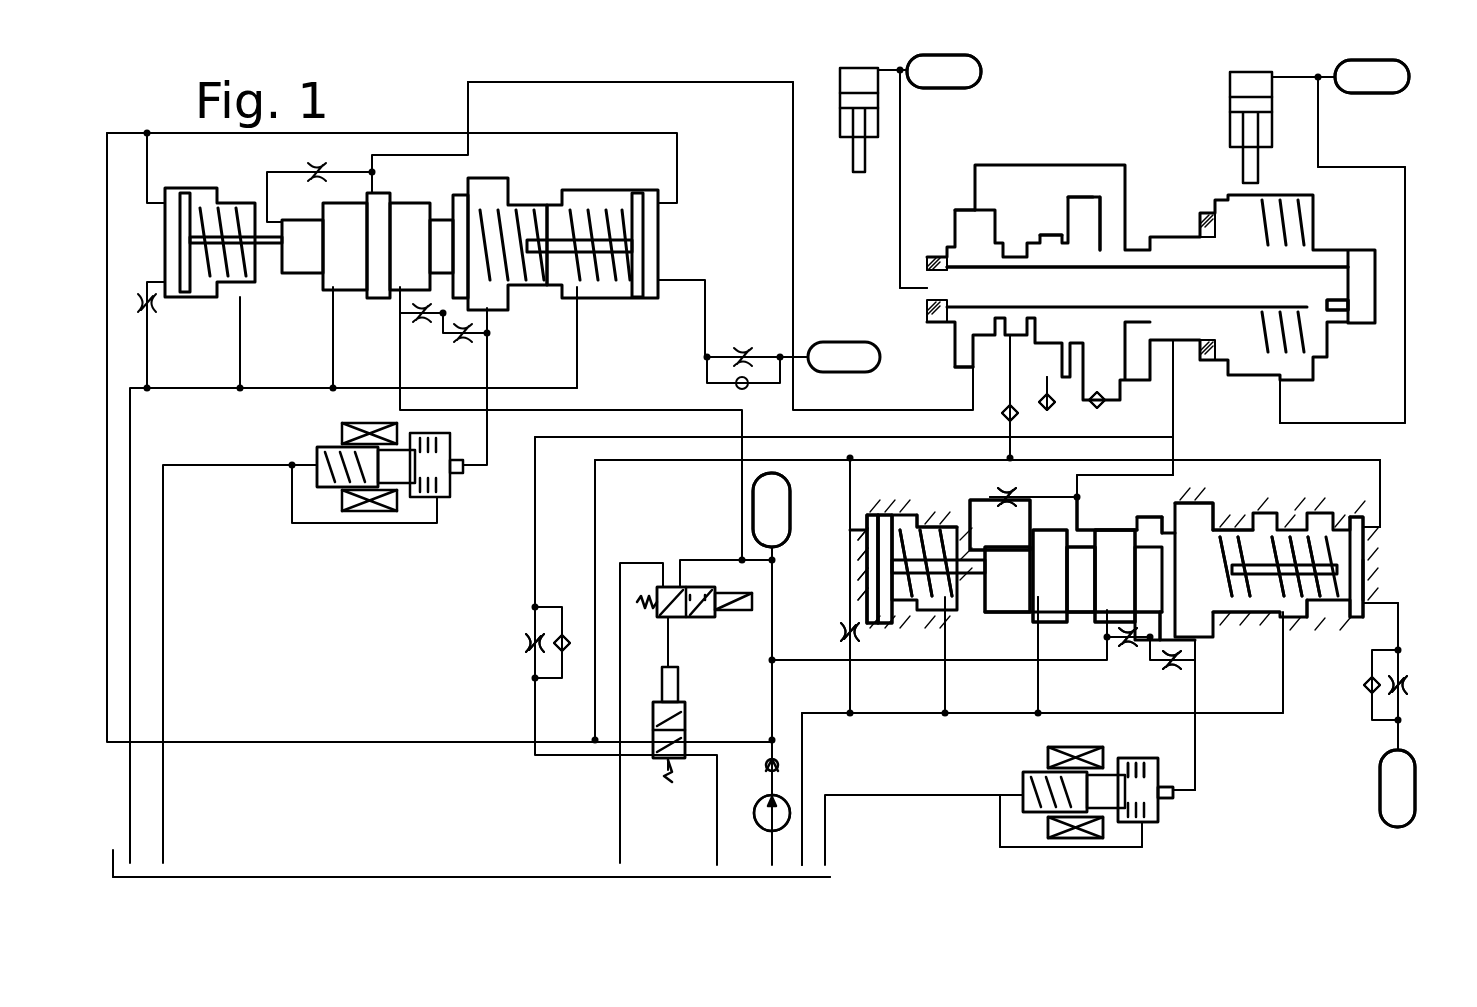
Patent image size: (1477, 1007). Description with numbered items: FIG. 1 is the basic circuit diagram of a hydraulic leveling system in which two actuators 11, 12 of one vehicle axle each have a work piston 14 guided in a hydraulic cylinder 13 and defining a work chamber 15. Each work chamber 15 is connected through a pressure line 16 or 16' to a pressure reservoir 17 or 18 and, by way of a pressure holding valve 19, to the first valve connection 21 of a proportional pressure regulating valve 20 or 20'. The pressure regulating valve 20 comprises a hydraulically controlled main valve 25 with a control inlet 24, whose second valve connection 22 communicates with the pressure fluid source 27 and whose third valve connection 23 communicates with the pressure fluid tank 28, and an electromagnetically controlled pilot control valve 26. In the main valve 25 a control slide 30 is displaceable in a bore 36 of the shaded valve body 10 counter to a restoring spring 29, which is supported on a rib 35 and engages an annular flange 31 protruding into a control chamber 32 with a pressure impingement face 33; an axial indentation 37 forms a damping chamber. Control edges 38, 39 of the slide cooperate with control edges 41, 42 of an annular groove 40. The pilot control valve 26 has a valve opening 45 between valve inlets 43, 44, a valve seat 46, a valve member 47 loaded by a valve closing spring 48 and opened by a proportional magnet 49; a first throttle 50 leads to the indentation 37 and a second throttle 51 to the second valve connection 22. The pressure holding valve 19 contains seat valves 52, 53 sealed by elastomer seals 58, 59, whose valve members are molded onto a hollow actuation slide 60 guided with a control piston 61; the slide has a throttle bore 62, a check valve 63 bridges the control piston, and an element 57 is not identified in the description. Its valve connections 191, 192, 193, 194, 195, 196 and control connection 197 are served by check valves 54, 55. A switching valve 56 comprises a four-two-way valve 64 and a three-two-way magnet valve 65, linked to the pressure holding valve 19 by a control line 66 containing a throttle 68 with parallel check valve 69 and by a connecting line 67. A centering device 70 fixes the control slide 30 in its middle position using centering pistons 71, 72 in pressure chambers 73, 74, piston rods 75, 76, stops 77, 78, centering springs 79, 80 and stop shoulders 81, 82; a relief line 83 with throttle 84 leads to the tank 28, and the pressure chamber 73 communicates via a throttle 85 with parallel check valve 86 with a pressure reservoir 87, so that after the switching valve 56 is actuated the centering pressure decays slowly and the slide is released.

The valve body 10 is at (990, 623).
The actuator 11 is at (1255, 72).
The actuator 12 is at (858, 68).
The hydraulic cylinder 13 is at (845, 118).
The work piston 14 is at (880, 93).
The work chamber 15 is at (842, 75).
The pressure line 16 is at (1302, 250).
The pressure line 16' is at (723, 94).
The pressure reservoir 17 is at (1395, 75).
The pressure reservoir 18 is at (960, 62).
The pressure holding valve 19 is at (1345, 248).
The proportional pressure regulating valve 20 is at (978, 834).
The proportional pressure regulating valve 20' is at (292, 510).
The first valve connection 21 is at (1080, 480).
The second valve connection 22 is at (1103, 622).
The third valve connection 23 is at (1035, 605).
The control inlet 24 is at (1175, 625).
The main valve 25 is at (1188, 500).
The pilot control valve 26 is at (1035, 847).
The pressure fluid source 27 is at (770, 820).
The pressure fluid tank 28 is at (495, 870).
The restoring spring 29 is at (1258, 540).
The control slide 30 is at (1055, 530).
The annular flange 31 is at (1205, 525).
The control chamber 32 is at (1215, 612).
The pressure impingement face 33 is at (1160, 525).
The rib 35 is at (1292, 535).
The bore 36 is at (990, 510).
The axial indentation 37 is at (1198, 650).
The control edge 38 is at (1090, 520).
The control edge 39 is at (1007, 495).
The annular groove 40 is at (1048, 622).
The control edge 41 is at (1072, 615).
The control edge 42 is at (1038, 648).
The valve inlet 43 is at (1178, 798).
The valve inlet 44 is at (1150, 822).
The valve opening 45 is at (1175, 790).
The valve seat 46 is at (1165, 785).
The valve member 47 is at (1152, 760).
The valve closing spring 48 is at (1045, 775).
The proportional magnet 49 is at (1075, 840).
The first throttle 50 is at (1172, 668).
The second throttle 51 is at (1128, 645).
The seat valve 52 is at (1207, 210).
The seat valve 53 is at (945, 245).
The check valve 54 is at (1052, 404).
The check valve 55 is at (1002, 413).
The switching valve 56 is at (685, 640).
The land 57 is at (1080, 203).
The elastomer seal 58 is at (1200, 225).
The elastomer seal 59 is at (925, 260).
The actuation slide 60 is at (1050, 255).
The control piston 61 is at (1105, 225).
The throttle bore 62 is at (1340, 300).
The check valve 63 is at (1108, 400).
The 4/2-way valve 64 is at (665, 750).
The 3/2-way magnet valve 65 is at (672, 587).
The control line 66 is at (532, 530).
The connecting line 67 is at (593, 540).
The throttle 68 is at (530, 645).
The check valve 69 is at (575, 660).
The centering device 70 is at (1380, 520).
The centering piston 71 is at (1355, 540).
The centering piston 72 is at (897, 530).
The pressure chamber 73 is at (1350, 517).
The pressure chamber 74 is at (870, 515).
The piston rod 75 is at (1308, 615).
The piston rod 76 is at (920, 612).
The stop 77 is at (1362, 580).
The stop 78 is at (865, 570).
The centering spring 79 is at (1365, 605).
The centering spring 80 is at (860, 610).
The stop shoulder 81 is at (1335, 500).
The stop shoulder 82 is at (928, 522).
The relief line 83 is at (805, 750).
The throttle 84 is at (860, 640).
The throttle 85 is at (1408, 685).
The check valve 86 is at (1370, 695).
The pressure reservoir 87 is at (1172, 520).
The first valve connection 191 is at (1282, 380).
The second valve connection 192 is at (920, 295).
The third valve connection 193 is at (1172, 342).
The fourth valve connection 194 is at (968, 368).
The fifth valve connection 195 is at (1047, 346).
The sixth valve connection 196 is at (1008, 338).
The control connection 197 is at (1097, 406).